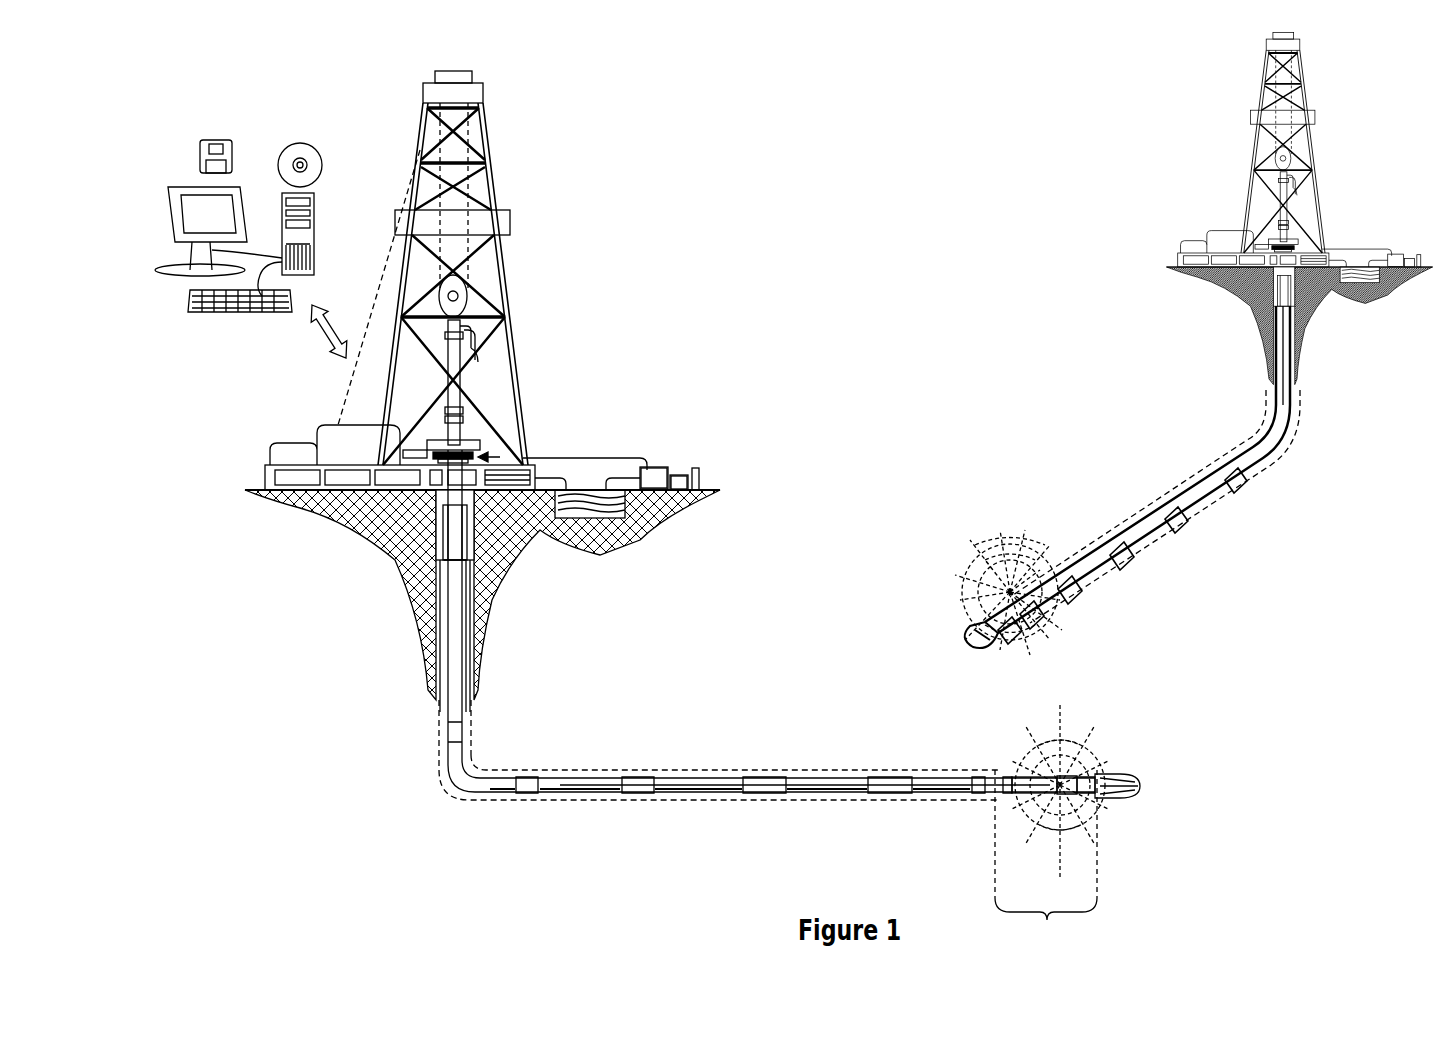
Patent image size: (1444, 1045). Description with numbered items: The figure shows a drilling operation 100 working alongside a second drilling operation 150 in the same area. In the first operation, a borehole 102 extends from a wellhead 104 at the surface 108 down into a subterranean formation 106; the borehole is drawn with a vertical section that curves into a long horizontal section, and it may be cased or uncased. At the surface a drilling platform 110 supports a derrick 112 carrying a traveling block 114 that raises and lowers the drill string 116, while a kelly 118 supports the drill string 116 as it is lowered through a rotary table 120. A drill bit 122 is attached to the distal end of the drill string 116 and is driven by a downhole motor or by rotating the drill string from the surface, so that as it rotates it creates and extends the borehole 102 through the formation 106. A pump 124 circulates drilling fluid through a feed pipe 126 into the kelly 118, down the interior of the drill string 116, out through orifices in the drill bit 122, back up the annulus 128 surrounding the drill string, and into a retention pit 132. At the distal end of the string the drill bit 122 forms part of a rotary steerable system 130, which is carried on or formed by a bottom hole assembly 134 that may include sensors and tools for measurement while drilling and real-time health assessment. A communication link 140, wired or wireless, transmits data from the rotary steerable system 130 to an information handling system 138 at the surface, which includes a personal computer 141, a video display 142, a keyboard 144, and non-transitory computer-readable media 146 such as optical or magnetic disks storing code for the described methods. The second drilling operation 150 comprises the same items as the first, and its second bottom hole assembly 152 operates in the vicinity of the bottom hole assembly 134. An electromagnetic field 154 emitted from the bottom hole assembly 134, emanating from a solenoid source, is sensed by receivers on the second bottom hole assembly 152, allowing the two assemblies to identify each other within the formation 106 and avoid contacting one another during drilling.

The drilling operation 100 is at (471, 378).
The borehole 102 is at (473, 660).
The wellhead 104 is at (500, 457).
The subterranean formation 106 is at (675, 725).
The surface 108 is at (712, 488).
The drilling platform 110 is at (265, 477).
The derrick 112 is at (496, 170).
The traveling block 114 is at (470, 300).
The drill string 116 is at (463, 648).
The kelly 118 is at (456, 358).
The rotary table 120 is at (472, 437).
The drill bit 122 is at (1110, 803).
The pump 124 is at (663, 465).
The feed pipe 126 is at (612, 455).
The annulus 128 is at (430, 640).
The rotary steerable system 130 is at (1110, 773).
The retention pit 132 is at (605, 553).
The bottom hole assembly 134 is at (1046, 861).
The information handling system 138 is at (249, 220).
The communication link 140 is at (318, 336).
The personal computer 141 is at (314, 205).
The video display 142 is at (170, 228).
The keyboard 144 is at (190, 305).
The non-transitory computer-readable media 146 is at (300, 143).
The second drilling operation 150 is at (1193, 57).
The second bottom hole assembly 152 is at (917, 578).
The electromagnetic field 154 is at (938, 686).